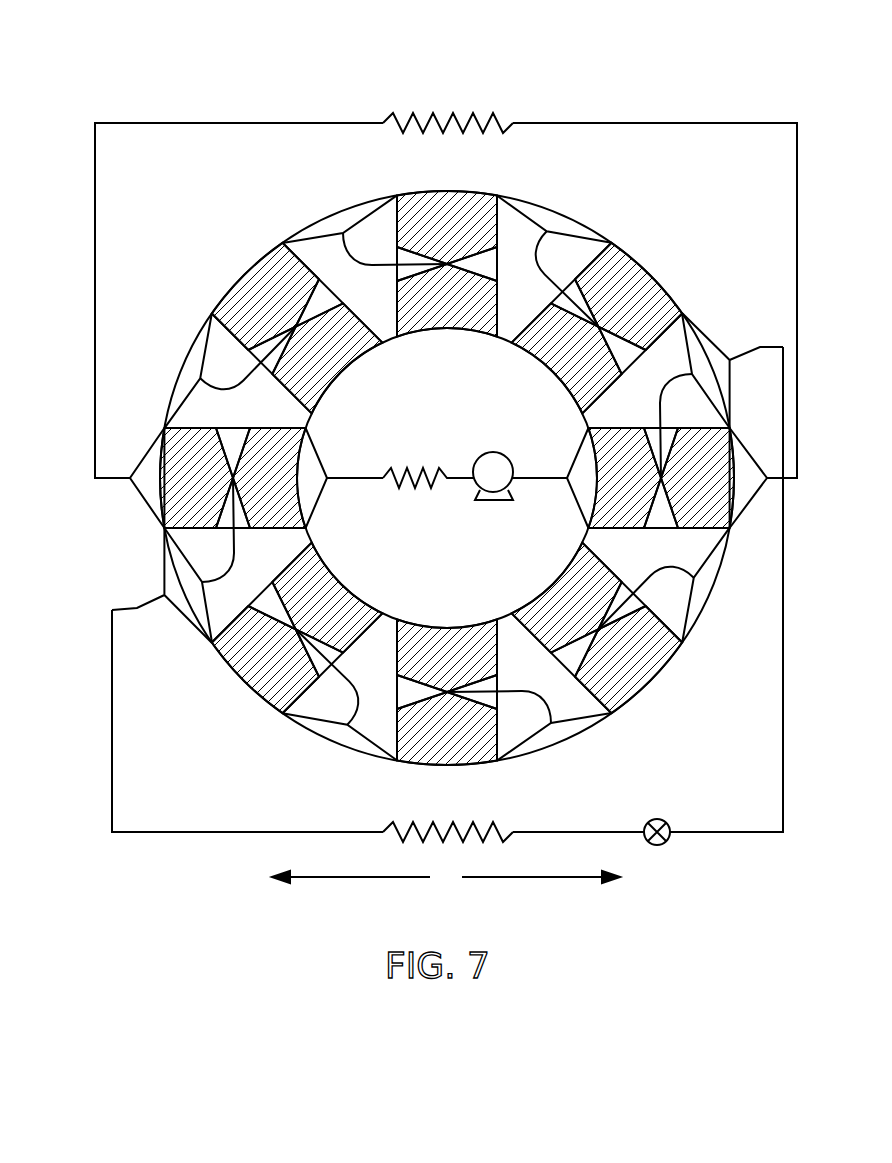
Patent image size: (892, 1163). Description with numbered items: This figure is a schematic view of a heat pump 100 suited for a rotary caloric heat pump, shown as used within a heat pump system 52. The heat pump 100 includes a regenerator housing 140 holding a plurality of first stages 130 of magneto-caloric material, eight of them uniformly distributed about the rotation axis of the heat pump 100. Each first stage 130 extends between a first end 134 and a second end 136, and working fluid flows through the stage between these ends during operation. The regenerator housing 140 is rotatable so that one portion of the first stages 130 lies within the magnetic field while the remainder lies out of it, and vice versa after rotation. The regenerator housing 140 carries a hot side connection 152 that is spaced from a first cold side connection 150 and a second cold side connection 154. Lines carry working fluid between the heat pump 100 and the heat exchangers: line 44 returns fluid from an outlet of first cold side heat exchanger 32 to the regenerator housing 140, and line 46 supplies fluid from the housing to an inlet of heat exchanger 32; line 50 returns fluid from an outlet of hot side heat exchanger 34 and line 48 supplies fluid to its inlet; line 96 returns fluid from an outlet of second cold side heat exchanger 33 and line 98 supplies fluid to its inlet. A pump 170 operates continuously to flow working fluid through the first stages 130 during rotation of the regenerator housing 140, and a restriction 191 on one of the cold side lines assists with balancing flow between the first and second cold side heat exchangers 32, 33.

The heat pump system 52 is at (104, 76).
The heat pump 100 is at (637, 216).
The first stage 130 is at (283, 442).
The first end 134 is at (158, 537).
The second end 136 is at (298, 545).
The regenerator housing 140 is at (282, 242).
The first cold side connection 150 is at (660, 477).
The hot side connection 152 is at (315, 492).
The second cold side connection 154 is at (160, 477).
The line 98 is at (250, 124).
The line 96 is at (798, 243).
The second cold side heat exchanger 33 is at (427, 135).
The first cold side heat exchanger 32 is at (498, 831).
The hot side heat exchanger 34 is at (407, 484).
The line 44 is at (114, 762).
The line 46 is at (782, 763).
The line 48 is at (362, 477).
The line 50 is at (540, 478).
The pump 170 is at (493, 470).
The restriction 191 is at (657, 818).